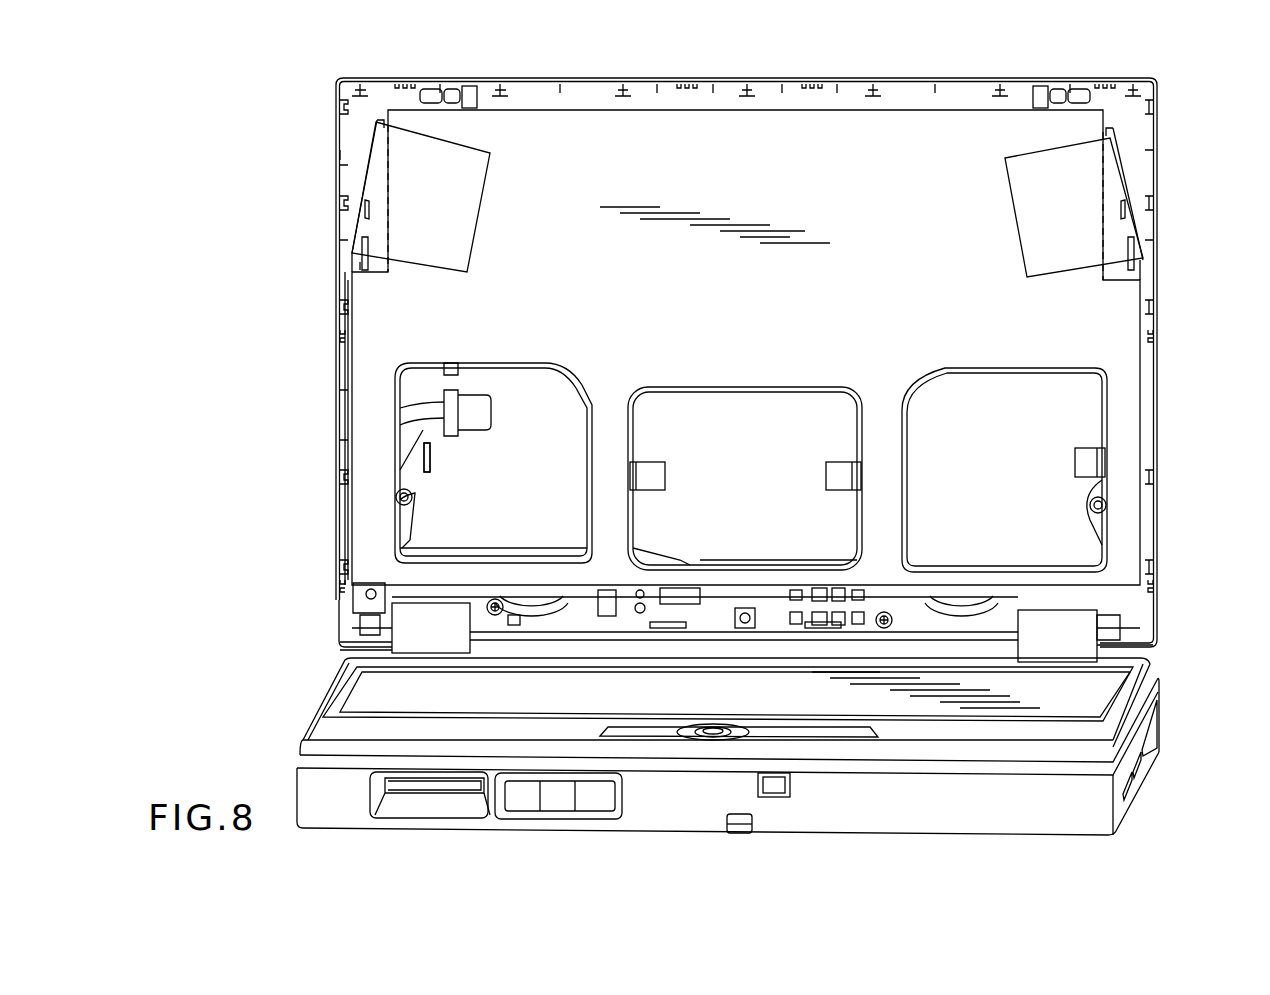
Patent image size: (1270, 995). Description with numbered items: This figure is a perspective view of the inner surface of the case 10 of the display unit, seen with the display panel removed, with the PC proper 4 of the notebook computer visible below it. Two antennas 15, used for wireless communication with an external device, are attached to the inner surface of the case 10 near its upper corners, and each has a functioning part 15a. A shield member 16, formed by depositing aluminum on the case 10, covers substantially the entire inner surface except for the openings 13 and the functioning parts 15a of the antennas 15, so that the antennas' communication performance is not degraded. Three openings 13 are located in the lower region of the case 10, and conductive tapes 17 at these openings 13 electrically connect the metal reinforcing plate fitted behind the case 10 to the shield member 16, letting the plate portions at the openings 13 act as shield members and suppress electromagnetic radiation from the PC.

The case 10 is at (892, 80).
The antennas 15 is at (470, 182).
The functioning parts 15a is at (350, 178).
The shield member 16 is at (348, 300).
The openings 13 is at (517, 385).
The conductive tapes 17 is at (434, 458).
The PC proper (main unit) 4 is at (1078, 825).